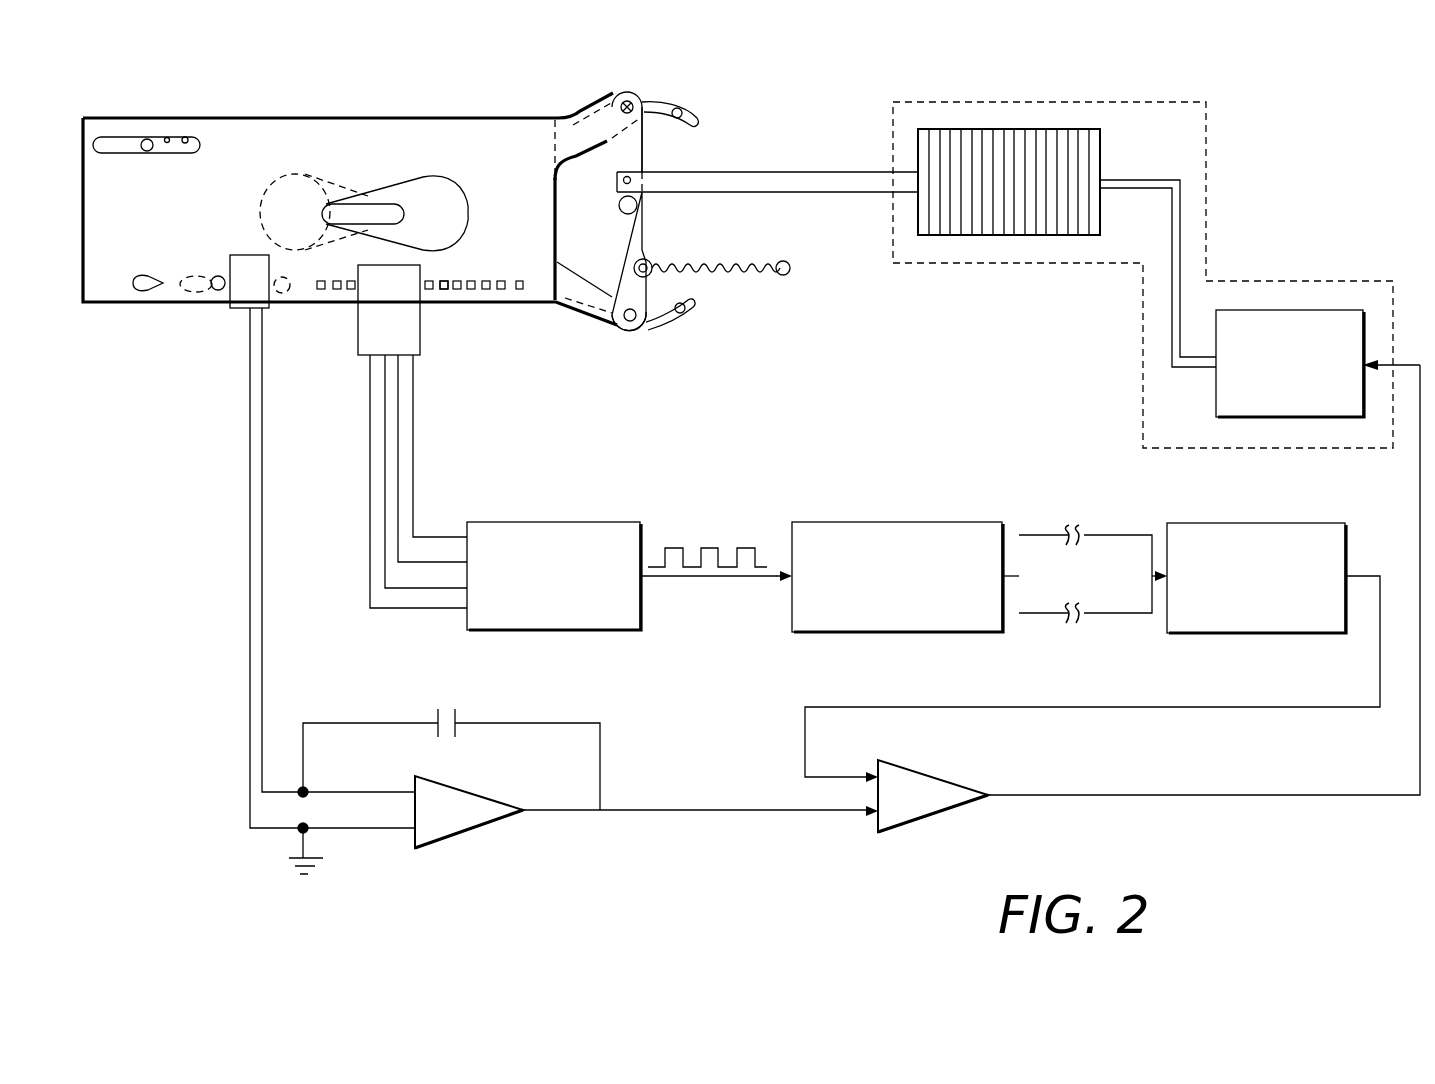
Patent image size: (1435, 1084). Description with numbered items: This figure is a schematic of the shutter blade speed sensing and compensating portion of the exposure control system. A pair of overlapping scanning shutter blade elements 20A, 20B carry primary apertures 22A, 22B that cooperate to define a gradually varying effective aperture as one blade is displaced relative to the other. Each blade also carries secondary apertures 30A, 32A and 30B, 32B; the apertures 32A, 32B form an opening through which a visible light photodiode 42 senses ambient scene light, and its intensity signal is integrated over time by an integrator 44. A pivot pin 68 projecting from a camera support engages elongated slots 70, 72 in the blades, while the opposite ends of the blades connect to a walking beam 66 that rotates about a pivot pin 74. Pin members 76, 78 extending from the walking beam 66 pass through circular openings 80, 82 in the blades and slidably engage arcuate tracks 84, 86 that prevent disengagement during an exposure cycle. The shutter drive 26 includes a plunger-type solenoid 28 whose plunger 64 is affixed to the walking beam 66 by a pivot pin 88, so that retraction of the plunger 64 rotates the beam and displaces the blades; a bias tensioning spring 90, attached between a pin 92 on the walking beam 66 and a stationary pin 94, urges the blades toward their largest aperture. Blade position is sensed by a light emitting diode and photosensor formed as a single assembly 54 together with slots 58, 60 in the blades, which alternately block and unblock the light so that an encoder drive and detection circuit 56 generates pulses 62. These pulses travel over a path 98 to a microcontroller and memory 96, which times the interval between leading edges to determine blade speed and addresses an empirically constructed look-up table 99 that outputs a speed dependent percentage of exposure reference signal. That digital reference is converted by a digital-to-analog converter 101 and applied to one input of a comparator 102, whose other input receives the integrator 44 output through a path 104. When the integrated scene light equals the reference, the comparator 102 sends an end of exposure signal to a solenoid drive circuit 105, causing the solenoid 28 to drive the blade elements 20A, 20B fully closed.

The shutter blade element 20A is at (388, 135).
The shutter blade element 20B is at (584, 318).
The primary aperture 22A is at (443, 200).
The primary aperture 22B is at (268, 181).
The shutter drive 26 is at (1183, 150).
The plunger-type solenoid 28 is at (1075, 157).
The secondary aperture 30A is at (143, 290).
The secondary aperture 30B is at (197, 305).
The secondary aperture 32A is at (220, 276).
The secondary aperture 32B is at (279, 303).
The visible light photodiode 42 is at (250, 254).
The integrator 44 is at (412, 871).
The single assembly 54 is at (433, 341).
The encoder drive and detection circuit 56 is at (533, 522).
The slots 58 is at (494, 292).
The slots 60 is at (438, 292).
The pulses 62 is at (703, 533).
The plunger 64 is at (788, 172).
The walking beam 66 is at (632, 235).
The pivot pin 68 is at (147, 139).
The elongated slot 70 is at (186, 137).
The elongated slot 72 is at (168, 137).
The pivot pin 74 is at (619, 206).
The pin member 76 is at (627, 100).
The pin member 78 is at (628, 322).
The circular opening 80 is at (647, 110).
The circular opening 82 is at (634, 322).
The arcuate track 84 is at (675, 108).
The arcuate track 86 is at (681, 313).
The pivot pin 88 is at (631, 178).
The bias tensioning spring 90 is at (730, 262).
The pin 92 is at (637, 265).
The pin 94 is at (787, 262).
The microcontroller and memory 96 is at (953, 522).
The path 98 is at (748, 578).
The look-up table 99 is at (1105, 535).
The digital-to-analog converter 101 is at (1217, 523).
The comparator 102 is at (942, 775).
The path 104 is at (655, 810).
The solenoid drive circuit 105 is at (1244, 308).